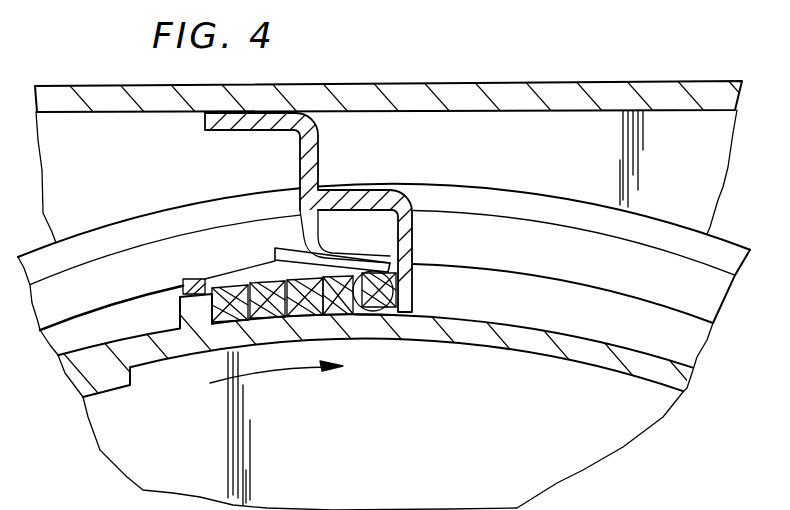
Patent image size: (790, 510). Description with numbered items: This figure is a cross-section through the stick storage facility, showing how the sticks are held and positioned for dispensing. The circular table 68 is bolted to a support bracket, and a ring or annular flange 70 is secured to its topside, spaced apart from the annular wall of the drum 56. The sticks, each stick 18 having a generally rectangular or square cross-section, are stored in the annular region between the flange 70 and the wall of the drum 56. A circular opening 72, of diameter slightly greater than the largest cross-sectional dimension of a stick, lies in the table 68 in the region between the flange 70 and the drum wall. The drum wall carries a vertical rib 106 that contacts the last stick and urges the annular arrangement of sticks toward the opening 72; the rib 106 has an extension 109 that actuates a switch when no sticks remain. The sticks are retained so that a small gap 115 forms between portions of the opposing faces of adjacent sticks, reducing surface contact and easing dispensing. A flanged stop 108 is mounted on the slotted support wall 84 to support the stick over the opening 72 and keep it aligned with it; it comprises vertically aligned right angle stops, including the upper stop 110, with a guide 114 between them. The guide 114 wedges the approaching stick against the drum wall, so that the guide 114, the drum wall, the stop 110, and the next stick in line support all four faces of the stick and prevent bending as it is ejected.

The stick 18 is at (396, 290).
The drum 56 is at (553, 350).
The table 68 is at (725, 262).
The ring or annular flange 70 is at (608, 273).
The circular opening 72 is at (378, 312).
The slotted support wall 84 is at (473, 102).
The vertical rib 106 is at (183, 287).
The flanged stop 108 is at (333, 154).
The extension 109 is at (180, 310).
The upper right angle stop 110 is at (412, 238).
The guide 114 is at (273, 252).
The gap 115 is at (235, 277).